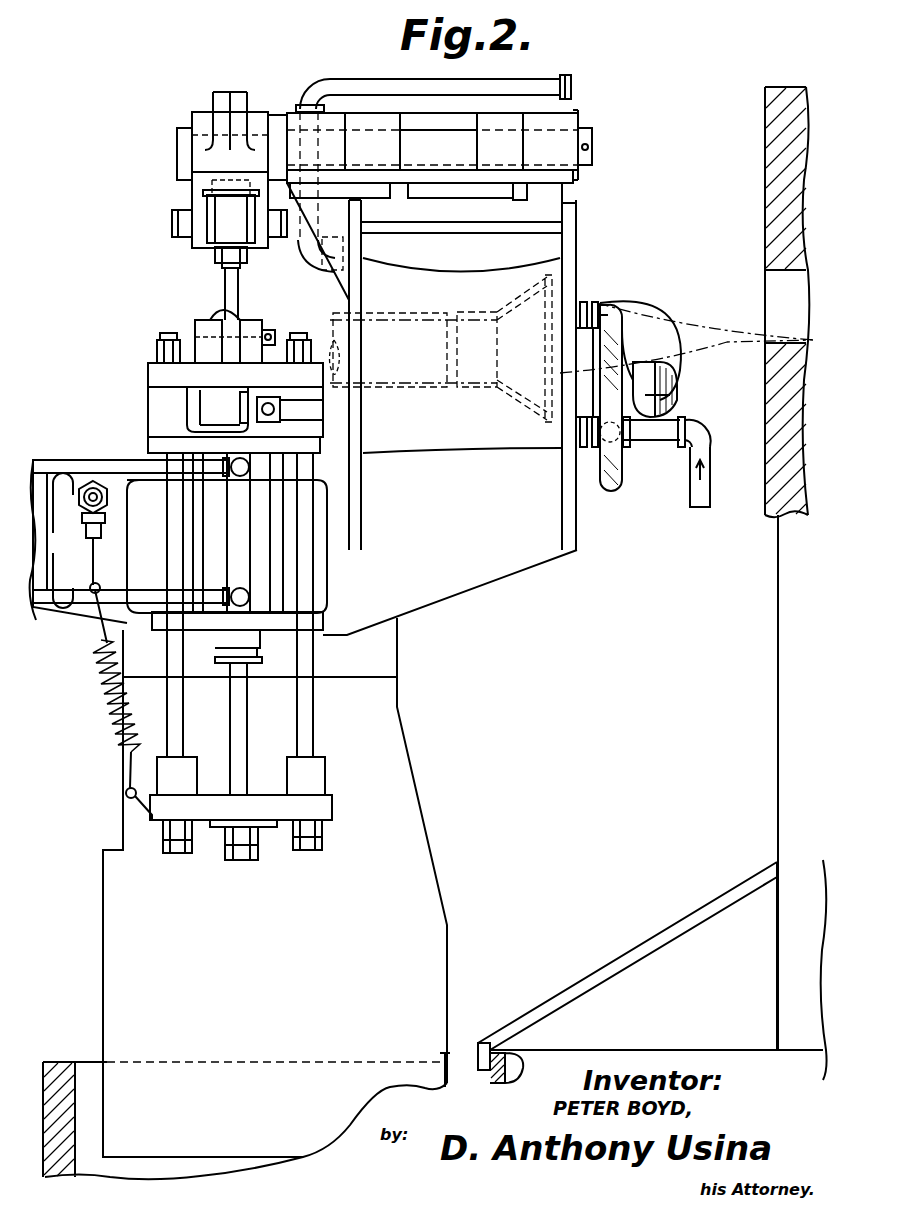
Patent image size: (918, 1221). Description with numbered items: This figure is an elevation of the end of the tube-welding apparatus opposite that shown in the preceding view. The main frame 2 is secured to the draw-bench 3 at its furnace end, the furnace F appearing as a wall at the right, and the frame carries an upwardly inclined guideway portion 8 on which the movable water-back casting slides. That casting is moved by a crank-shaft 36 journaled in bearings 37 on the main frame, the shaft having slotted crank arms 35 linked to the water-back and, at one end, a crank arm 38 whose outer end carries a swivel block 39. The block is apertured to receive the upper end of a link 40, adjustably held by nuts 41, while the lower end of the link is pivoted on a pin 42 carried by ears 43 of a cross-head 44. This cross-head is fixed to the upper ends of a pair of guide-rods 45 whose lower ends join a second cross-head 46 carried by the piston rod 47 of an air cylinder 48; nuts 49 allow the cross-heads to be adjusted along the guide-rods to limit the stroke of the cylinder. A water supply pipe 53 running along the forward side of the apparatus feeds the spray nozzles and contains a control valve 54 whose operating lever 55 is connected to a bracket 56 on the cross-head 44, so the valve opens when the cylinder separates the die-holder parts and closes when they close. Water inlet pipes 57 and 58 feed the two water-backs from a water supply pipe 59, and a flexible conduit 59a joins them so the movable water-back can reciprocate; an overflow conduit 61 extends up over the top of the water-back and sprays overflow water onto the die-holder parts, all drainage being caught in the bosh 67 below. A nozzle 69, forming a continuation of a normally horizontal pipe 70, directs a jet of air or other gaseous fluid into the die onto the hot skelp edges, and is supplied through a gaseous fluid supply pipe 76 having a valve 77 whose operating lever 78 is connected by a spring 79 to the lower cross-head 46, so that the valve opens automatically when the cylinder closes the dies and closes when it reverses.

The furnace F is at (772, 166).
The main frame 2 is at (562, 201).
The draw-bench 3 is at (376, 644).
The upwardly inclined guideway portion 8 is at (540, 247).
The crank arms 35 is at (434, 141).
The crank-shaft 36 is at (440, 150).
The bearings 37 is at (294, 118).
The crank arm 38 is at (206, 118).
The swivel block 39 is at (213, 215).
The link 40 is at (228, 290).
The nuts 41 is at (218, 255).
The pin 42 is at (198, 330).
The ears 43 is at (255, 322).
The cross-head 44 is at (148, 376).
The guide-rods 45 is at (176, 692).
The cross-head 46 is at (312, 806).
The piston rod 47 is at (240, 692).
The air cylinder 48 is at (178, 558).
The nuts 49 is at (304, 342).
The water supply pipe 53 is at (282, 408).
The control valve 54 is at (262, 425).
The operating lever 55 is at (242, 405).
The bracket 56 is at (232, 421).
The water inlet pipe 57 is at (593, 447).
The water inlet pipe 58 is at (588, 305).
The water supply pipe 59 is at (712, 482).
The flexible conduit 59a is at (611, 470).
The overflow conduit 61 is at (376, 92).
The bosh 67 is at (88, 1062).
The nozzle 69 is at (660, 400).
The pipe 70 is at (635, 322).
The gaseous fluid supply pipe 76 is at (94, 482).
The valve 77 is at (82, 490).
The operating lever 78 is at (120, 555).
The spring 79 is at (108, 708).